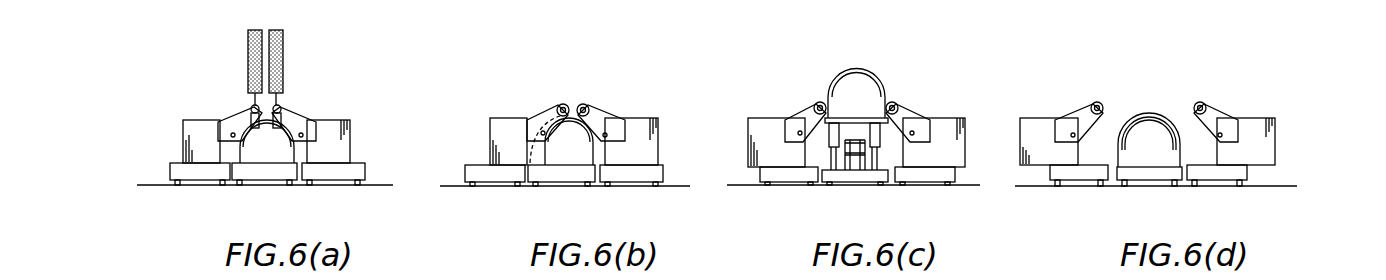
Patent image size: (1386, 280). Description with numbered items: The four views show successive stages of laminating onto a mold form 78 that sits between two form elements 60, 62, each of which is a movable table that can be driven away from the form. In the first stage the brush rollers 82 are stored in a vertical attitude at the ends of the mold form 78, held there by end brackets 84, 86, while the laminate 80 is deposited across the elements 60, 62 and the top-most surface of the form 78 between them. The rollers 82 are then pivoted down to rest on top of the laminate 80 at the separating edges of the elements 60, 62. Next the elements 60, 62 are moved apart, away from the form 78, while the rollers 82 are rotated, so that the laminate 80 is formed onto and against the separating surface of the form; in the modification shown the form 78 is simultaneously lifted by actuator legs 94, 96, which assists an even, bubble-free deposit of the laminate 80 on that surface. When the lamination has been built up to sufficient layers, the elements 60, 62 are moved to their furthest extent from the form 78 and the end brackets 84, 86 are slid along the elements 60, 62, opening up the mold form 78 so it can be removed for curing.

In FIG. 6A, the form element 60 is at (186, 138).
In FIG. 6B, the form element 60 is at (498, 138).
In FIG. 6C, the form element 60 is at (758, 140).
In FIG. 6D, the form element 60 is at (1028, 142).
In FIG. 6A, the form element 62 is at (350, 138).
In FIG. 6B, the form element 62 is at (655, 138).
In FIG. 6C, the form element 62 is at (958, 135).
In FIG. 6D, the form element 62 is at (1278, 135).
In FIG. 6A, the mold form 78 is at (256, 161).
In FIG. 6B, the mold form 78 is at (556, 162).
In FIG. 6C, the mold form 78 is at (842, 112).
In FIG. 6D, the mold form 78 is at (1138, 162).
In FIG. 6C, the laminate 80 is at (856, 68).
In FIG. 6A, the brush roller 82 is at (248, 37).
In FIG. 6B, the brush roller 82 is at (565, 103).
In FIG. 6C, the brush roller 82 is at (820, 102).
In FIG. 6D, the brush roller 82 is at (1100, 102).
In FIG. 6A, the end bracket 84 is at (240, 103).
In FIG. 6B, the end bracket 84 is at (543, 112).
In FIG. 6C, the end bracket 84 is at (803, 118).
In FIG. 6D, the end bracket 84 is at (1079, 112).
In FIG. 6A, the end bracket 86 is at (296, 105).
In FIG. 6B, the end bracket 86 is at (605, 112).
In FIG. 6C, the end bracket 86 is at (910, 112).
In FIG. 6D, the end bracket 86 is at (1224, 110).
In FIG. 6C, the actuator leg 94 is at (850, 142).
In FIG. 6C, the actuator leg 96 is at (857, 145).